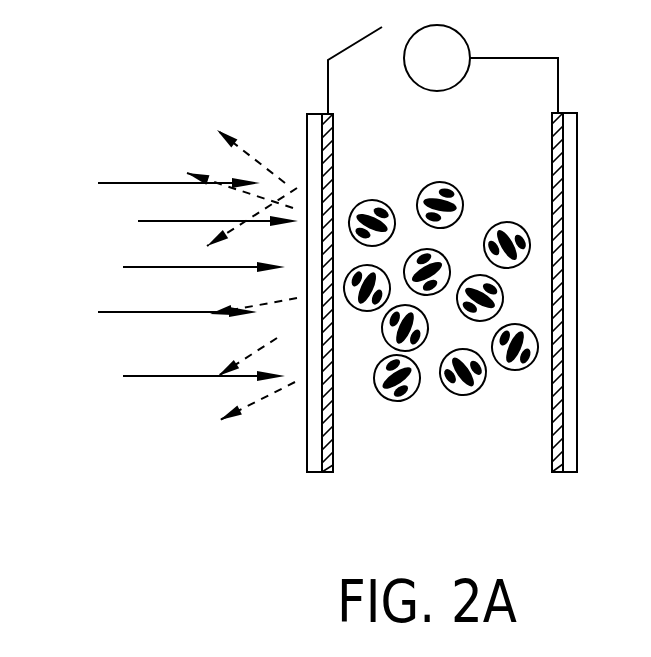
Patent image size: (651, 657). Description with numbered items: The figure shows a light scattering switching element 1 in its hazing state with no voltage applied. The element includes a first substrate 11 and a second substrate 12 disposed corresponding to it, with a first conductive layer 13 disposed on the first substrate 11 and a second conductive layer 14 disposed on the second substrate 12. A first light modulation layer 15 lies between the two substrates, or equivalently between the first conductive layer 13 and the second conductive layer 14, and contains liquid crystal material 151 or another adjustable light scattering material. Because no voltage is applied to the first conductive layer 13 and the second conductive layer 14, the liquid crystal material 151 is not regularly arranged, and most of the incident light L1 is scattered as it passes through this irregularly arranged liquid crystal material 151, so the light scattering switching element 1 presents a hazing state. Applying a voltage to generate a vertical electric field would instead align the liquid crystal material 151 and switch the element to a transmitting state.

The light scattering switching element 1 is at (56, 58).
The first substrate 11 is at (316, 472).
The second substrate 12 is at (570, 472).
The first conductive layer 13 is at (327, 472).
The second conductive layer 14 is at (557, 472).
The first light modulation layer 15 is at (340, 476).
The liquid crystal material 151 is at (397, 401).
The incident light L1 is at (148, 183).